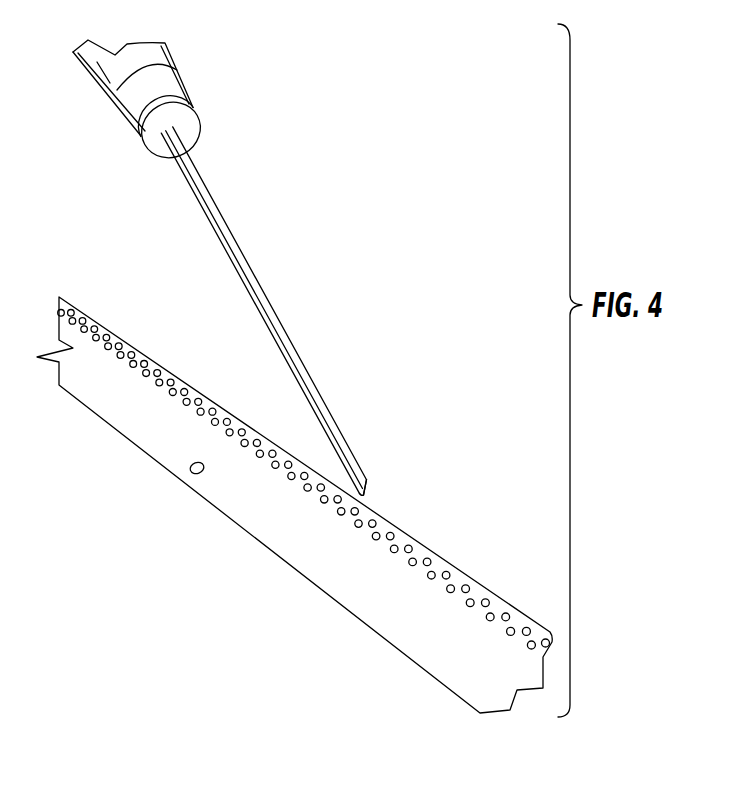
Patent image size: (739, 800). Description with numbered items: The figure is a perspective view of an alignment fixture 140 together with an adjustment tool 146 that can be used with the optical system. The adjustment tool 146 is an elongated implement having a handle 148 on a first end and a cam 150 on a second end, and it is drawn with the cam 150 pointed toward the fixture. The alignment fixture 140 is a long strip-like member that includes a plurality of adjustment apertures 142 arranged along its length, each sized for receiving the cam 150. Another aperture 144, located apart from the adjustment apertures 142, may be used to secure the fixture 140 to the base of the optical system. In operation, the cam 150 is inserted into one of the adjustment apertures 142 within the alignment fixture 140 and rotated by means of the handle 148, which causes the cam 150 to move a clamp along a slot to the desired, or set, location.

The alignment fixture 140 is at (133, 404).
The adjustment apertures 142 is at (162, 370).
The aperture 144 is at (190, 469).
The adjustment tool 146 is at (292, 272).
The handle 148 is at (167, 70).
The cam 150 is at (366, 481).